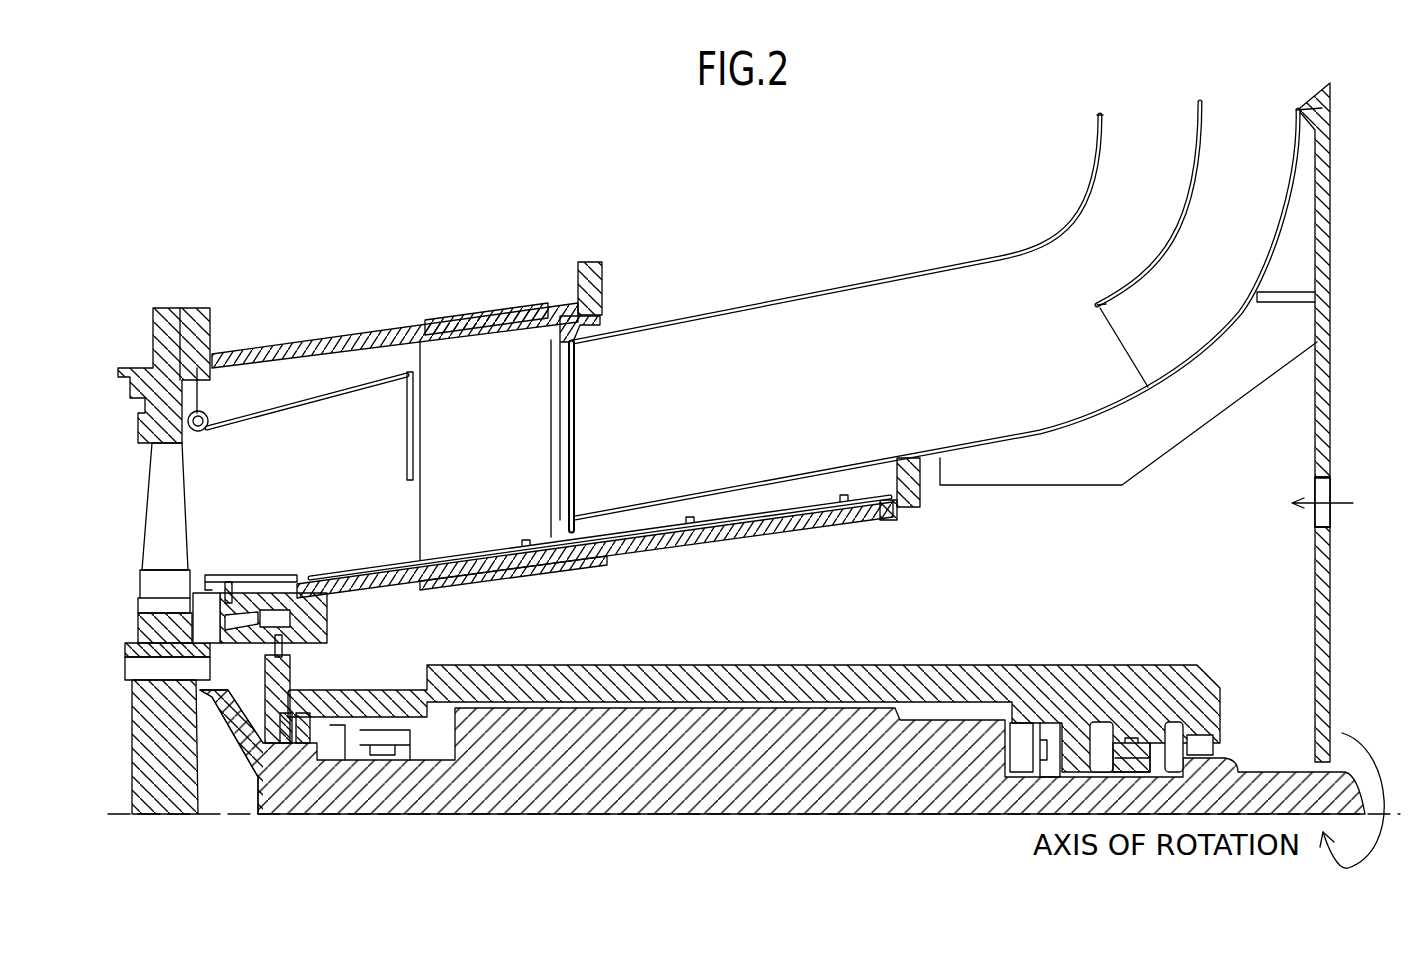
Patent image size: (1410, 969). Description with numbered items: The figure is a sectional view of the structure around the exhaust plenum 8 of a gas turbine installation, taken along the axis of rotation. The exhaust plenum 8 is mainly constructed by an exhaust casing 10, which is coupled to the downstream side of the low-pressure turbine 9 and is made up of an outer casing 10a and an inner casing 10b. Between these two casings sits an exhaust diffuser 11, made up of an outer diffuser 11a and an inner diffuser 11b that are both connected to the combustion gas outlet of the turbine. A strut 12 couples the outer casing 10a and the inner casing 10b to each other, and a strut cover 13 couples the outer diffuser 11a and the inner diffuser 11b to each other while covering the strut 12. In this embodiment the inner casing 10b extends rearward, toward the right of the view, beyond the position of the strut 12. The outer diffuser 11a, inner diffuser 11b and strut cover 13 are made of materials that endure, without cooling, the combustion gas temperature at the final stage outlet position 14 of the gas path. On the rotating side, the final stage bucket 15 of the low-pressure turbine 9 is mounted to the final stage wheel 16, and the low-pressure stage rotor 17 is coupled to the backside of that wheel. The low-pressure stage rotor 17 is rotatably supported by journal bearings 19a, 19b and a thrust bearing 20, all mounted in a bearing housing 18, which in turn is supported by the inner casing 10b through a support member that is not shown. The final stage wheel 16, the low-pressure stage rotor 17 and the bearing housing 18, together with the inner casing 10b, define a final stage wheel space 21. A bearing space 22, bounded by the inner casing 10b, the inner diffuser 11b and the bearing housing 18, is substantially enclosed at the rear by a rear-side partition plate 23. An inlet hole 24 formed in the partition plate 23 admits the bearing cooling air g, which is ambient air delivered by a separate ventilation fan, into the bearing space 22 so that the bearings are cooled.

The exhaust plenum 8 is at (606, 240).
The low-pressure turbine 9 is at (133, 690).
The exhaust casing 10 is at (482, 295).
The outer casing 10a is at (315, 347).
The inner casing 10b is at (595, 556).
The exhaust diffuser 11 is at (285, 430).
The outer diffuser 11a is at (348, 390).
The inner diffuser 11b is at (353, 575).
The strut 12 is at (498, 458).
The strut cover 13 is at (577, 444).
The final stage outlet position 14 is at (232, 509).
The final stage bucket 15 is at (179, 561).
The final stage wheel 16 is at (179, 791).
The low-pressure stage rotor 17 is at (723, 791).
The bearing housing 18 is at (955, 704).
The journal bearing 19a is at (347, 752).
The journal bearing 19b is at (1147, 765).
The thrust bearing 20 is at (1012, 742).
The final stage wheel space 21 is at (200, 628).
The bearing space 22 is at (824, 592).
The rear-side partition plate 23 is at (1330, 612).
The inlet hole 24 is at (1330, 528).
The bearing cooling air g is at (1340, 503).